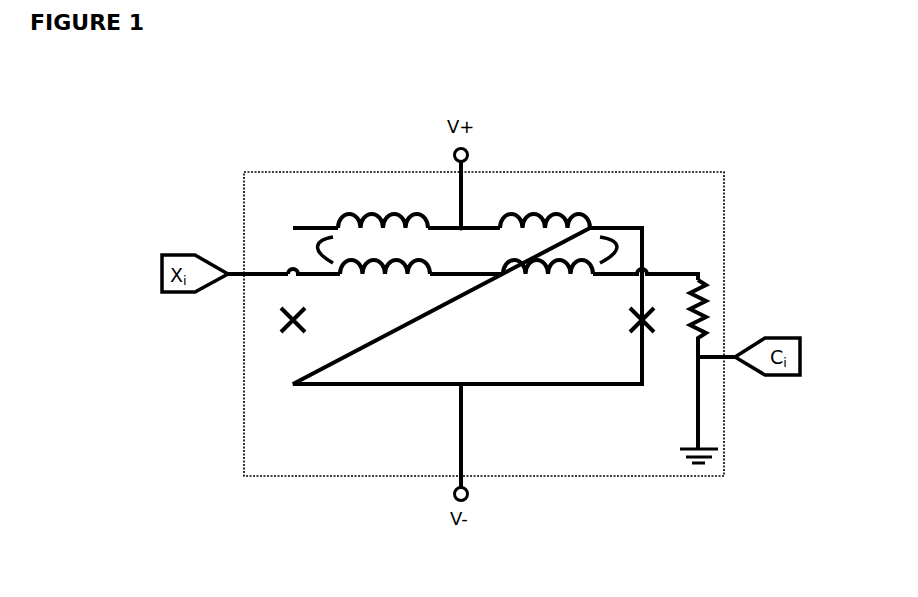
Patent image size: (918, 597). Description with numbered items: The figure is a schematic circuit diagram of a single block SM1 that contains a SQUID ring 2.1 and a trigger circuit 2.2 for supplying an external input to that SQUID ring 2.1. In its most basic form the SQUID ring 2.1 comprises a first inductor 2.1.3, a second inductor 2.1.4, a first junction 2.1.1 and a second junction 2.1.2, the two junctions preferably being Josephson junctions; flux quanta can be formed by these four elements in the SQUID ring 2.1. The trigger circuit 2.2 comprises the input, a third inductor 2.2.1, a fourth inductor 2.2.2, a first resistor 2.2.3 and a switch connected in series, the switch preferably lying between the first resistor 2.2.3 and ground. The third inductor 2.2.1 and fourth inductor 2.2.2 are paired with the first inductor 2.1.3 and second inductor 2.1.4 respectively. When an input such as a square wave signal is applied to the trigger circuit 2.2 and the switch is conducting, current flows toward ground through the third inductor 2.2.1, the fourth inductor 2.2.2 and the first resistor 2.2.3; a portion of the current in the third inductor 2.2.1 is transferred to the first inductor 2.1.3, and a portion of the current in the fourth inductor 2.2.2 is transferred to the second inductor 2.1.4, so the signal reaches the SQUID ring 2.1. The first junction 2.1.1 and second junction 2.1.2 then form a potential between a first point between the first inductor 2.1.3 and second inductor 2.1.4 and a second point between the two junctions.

The single block SM1 is at (218, 122).
The SQUID ring 2.1 is at (482, 243).
The first junction 2.1.1 is at (298, 320).
The second junction 2.1.2 is at (636, 322).
The first inductor 2.1.3 is at (370, 213).
The second inductor 2.1.4 is at (550, 213).
The trigger circuit 2.2 is at (549, 318).
The third inductor 2.2.1 is at (418, 282).
The fourth inductor 2.2.2 is at (548, 276).
The first resistor 2.2.3 is at (679, 266).